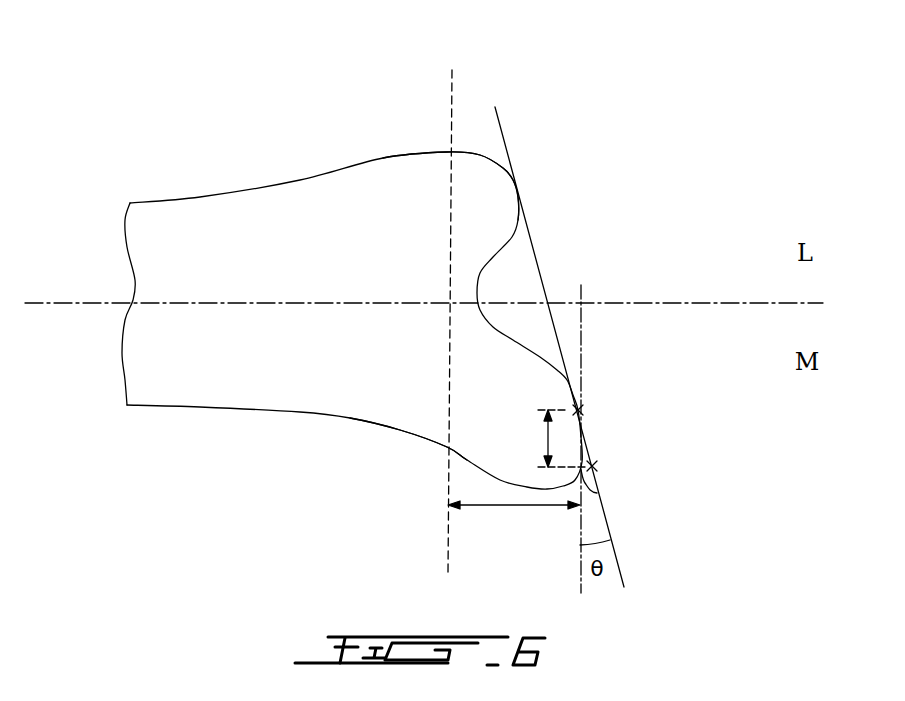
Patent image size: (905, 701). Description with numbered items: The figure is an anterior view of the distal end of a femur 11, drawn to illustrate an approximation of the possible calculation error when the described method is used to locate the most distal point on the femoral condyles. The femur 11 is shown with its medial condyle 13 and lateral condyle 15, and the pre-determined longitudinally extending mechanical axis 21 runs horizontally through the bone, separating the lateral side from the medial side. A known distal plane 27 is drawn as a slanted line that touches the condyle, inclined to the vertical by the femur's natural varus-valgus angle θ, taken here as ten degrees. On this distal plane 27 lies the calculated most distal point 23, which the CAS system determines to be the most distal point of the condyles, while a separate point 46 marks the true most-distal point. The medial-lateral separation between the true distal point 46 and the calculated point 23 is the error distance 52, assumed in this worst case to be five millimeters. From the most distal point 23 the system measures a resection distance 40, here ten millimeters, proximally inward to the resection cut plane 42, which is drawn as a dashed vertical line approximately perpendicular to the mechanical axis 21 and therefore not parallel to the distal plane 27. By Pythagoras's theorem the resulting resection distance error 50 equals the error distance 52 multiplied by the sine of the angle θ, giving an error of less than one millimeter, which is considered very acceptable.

The femur bone 11 is at (308, 160).
The medial condyle 13 is at (495, 412).
The lateral condyle 15 is at (465, 198).
The mechanical axis 21 is at (692, 303).
The most distal point 23 is at (593, 465).
The distal plane 27 is at (498, 122).
The resection distance 40 is at (518, 510).
The resection cut plane 42 is at (445, 543).
The true most-distal point 46 is at (580, 410).
The resection distance error 50 is at (597, 493).
The error distance 52 is at (546, 438).